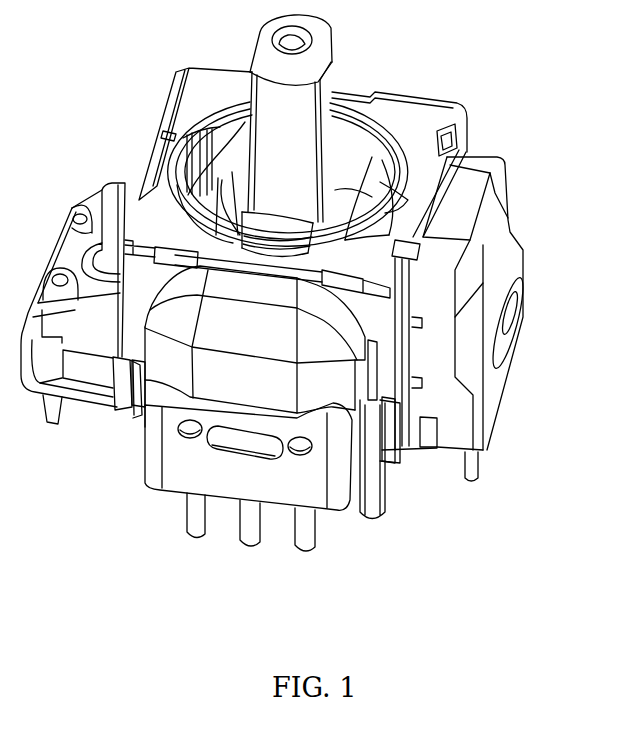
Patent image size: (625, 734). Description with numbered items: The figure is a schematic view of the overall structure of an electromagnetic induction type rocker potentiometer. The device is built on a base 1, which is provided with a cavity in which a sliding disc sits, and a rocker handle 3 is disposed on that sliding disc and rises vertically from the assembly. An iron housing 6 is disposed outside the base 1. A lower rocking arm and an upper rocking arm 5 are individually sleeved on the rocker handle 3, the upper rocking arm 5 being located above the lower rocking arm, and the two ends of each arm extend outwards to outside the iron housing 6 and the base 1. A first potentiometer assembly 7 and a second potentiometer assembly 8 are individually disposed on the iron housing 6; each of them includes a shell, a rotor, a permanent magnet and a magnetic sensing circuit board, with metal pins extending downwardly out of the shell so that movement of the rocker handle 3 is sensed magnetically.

The base 1 is at (110, 397).
The rocker handle 3 is at (267, 52).
The upper rocking arm 5 is at (223, 177).
The iron housing 6 is at (420, 127).
The first potentiometer assembly 7 is at (525, 257).
The second potentiometer assembly 8 is at (257, 465).